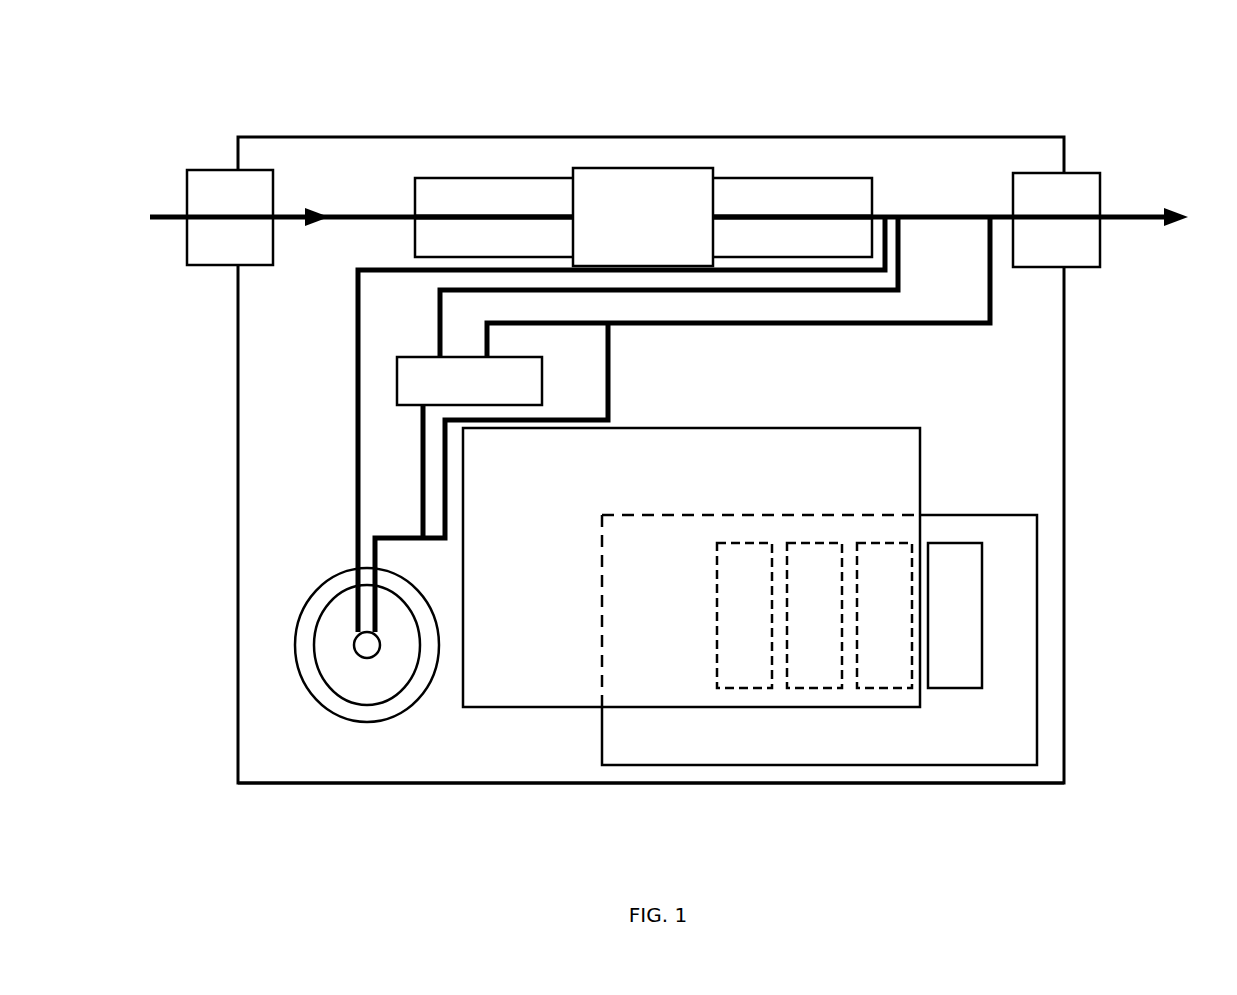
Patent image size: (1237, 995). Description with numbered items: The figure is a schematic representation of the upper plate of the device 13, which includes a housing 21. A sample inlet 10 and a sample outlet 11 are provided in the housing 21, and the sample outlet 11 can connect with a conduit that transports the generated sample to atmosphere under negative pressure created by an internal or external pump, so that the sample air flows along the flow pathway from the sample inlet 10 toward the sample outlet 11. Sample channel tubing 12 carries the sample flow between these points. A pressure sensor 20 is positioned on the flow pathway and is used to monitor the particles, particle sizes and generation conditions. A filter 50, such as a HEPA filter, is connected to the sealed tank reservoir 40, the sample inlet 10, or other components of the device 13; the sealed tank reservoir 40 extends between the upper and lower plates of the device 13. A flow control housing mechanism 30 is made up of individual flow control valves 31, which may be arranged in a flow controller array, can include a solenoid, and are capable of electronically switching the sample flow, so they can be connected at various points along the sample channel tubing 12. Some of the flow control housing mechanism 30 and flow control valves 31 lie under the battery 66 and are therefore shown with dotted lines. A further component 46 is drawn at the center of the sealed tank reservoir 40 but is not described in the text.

The sample inlet 10 is at (202, 150).
The sample outlet 11 is at (1098, 150).
The sample channel tubing 12 is at (343, 218).
The device 13 is at (902, 105).
The pressure sensor 20 is at (643, 217).
The housing 21 is at (910, 783).
The flow control housing mechanism 30 is at (819, 640).
The flow control valves 31 is at (849, 615).
The sealed tank reservoir 40 is at (407, 707).
The shaft 46 is at (317, 628).
The filter 50 is at (469, 381).
The battery 66 is at (691, 567).